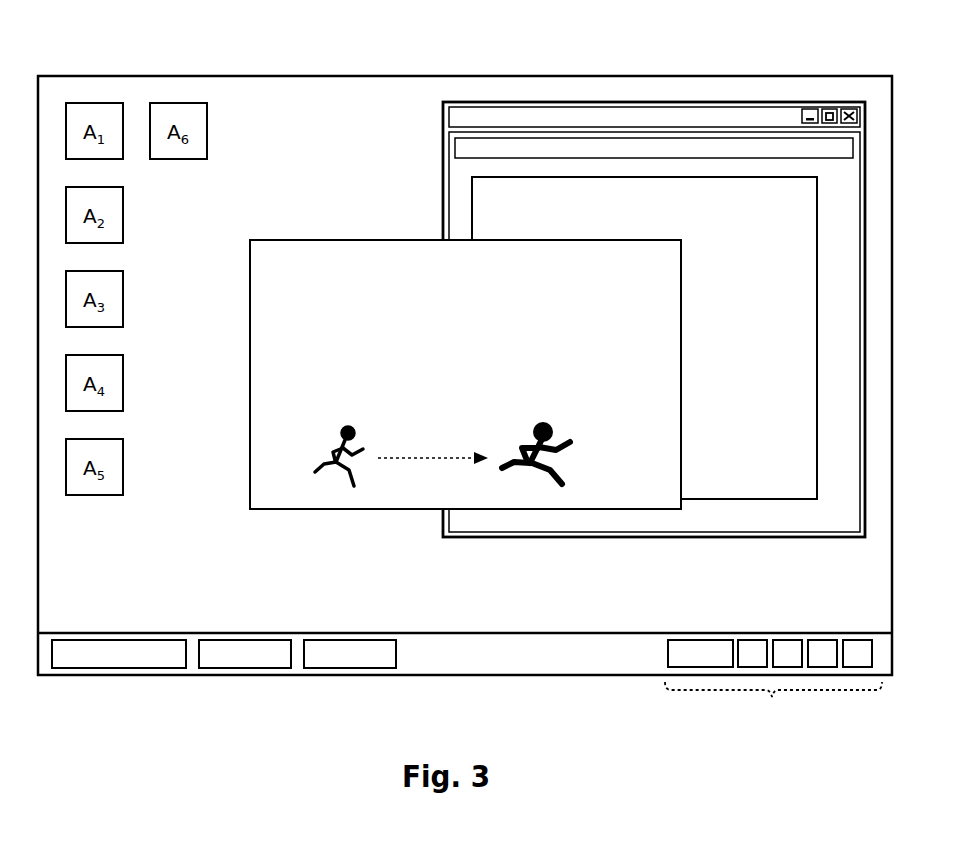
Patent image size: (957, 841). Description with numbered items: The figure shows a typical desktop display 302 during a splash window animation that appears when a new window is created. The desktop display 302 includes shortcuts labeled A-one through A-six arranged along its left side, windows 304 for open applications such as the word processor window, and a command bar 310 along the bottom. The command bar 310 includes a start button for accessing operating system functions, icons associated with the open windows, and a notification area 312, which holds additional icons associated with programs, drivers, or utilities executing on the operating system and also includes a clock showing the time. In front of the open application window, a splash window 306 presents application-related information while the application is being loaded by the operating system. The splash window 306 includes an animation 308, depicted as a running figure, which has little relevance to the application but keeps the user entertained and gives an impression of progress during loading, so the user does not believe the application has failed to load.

The desktop display 302 is at (342, 88).
The windows 304 is at (458, 178).
The splash window 306 is at (465, 344).
The animation 308 is at (575, 422).
The command bar 310 is at (442, 642).
The notification area 312 is at (737, 628).